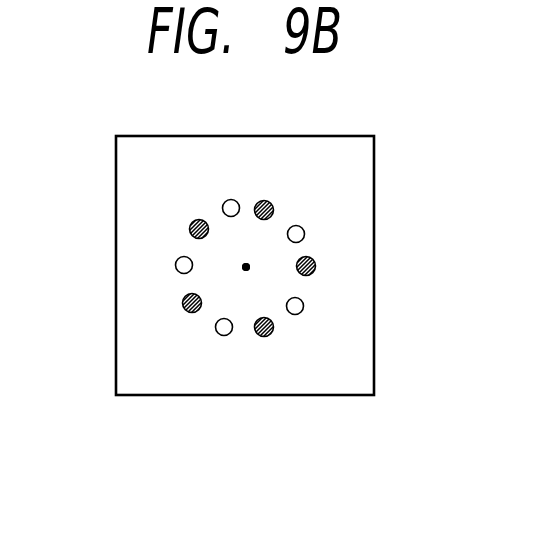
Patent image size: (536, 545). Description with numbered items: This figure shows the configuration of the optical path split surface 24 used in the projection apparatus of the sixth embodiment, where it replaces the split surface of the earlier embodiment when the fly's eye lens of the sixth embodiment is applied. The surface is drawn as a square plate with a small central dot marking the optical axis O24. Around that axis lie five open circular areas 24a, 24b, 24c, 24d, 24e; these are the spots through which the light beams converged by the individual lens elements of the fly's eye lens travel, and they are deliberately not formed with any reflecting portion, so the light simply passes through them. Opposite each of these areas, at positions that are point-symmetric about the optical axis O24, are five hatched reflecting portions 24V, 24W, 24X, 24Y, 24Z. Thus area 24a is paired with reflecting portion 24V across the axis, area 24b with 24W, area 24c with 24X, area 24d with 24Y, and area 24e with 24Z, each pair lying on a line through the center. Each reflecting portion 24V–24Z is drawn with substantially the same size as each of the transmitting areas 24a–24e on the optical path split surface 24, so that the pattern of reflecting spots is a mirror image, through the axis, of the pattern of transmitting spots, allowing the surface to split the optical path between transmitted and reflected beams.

The optical path split surface 24 is at (307, 136).
The reflecting portion 24Z is at (192, 220).
The area 24b is at (231, 199).
The reflecting portion 24Y is at (265, 200).
The area 24a is at (304, 230).
The reflecting portion 24X is at (315, 265).
The area 24e is at (304, 306).
The area 24c is at (176, 264).
The reflecting portion 24V is at (183, 303).
The optical axis O24 is at (243, 270).
The area 24d is at (226, 336).
The reflecting portion 24W is at (268, 336).